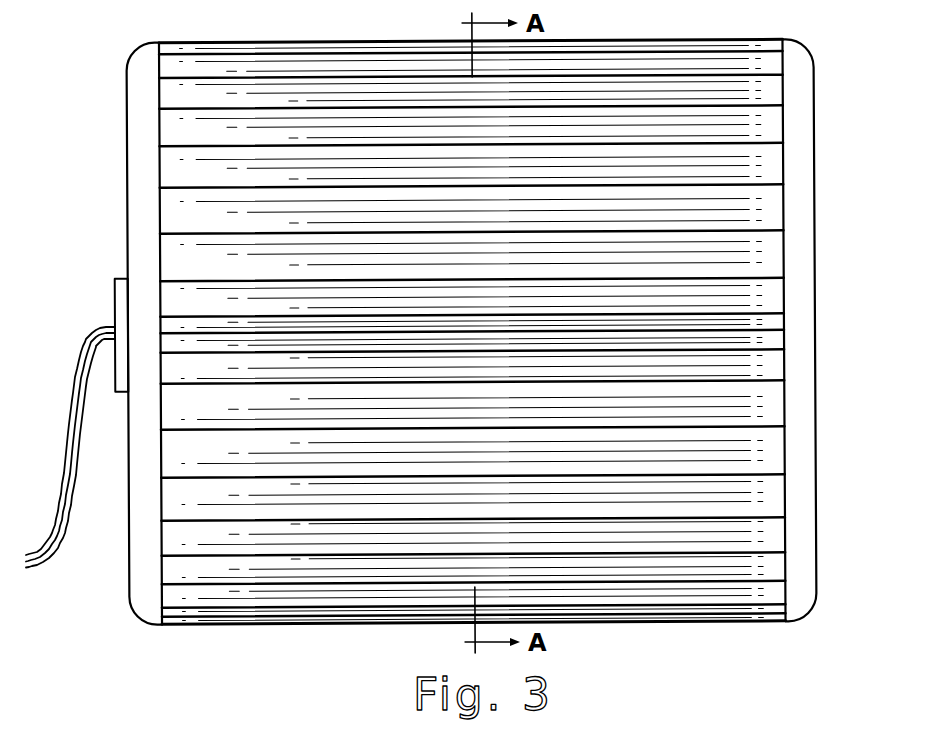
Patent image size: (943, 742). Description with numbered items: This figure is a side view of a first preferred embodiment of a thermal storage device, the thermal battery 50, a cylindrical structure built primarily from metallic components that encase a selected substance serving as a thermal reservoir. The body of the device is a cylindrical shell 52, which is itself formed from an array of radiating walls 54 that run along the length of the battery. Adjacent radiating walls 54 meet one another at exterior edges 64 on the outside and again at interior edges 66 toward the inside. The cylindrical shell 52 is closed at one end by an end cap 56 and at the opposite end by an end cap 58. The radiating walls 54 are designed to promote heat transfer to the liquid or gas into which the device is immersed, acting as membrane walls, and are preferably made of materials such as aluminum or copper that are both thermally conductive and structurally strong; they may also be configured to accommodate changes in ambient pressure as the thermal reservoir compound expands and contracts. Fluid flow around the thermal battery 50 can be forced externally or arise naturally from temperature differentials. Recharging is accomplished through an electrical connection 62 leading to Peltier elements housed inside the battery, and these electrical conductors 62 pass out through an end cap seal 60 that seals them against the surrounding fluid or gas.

The thermal battery 50 is at (461, 356).
The cylindrical shell 52 is at (713, 590).
The radiating walls 54 is at (758, 451).
The end cap 56 is at (800, 228).
The end cap 58 is at (135, 152).
The end cap seal 60 is at (115, 292).
The electrical connection 62 is at (79, 360).
The exterior edges 64 is at (766, 184).
The interior edges 66 is at (764, 313).